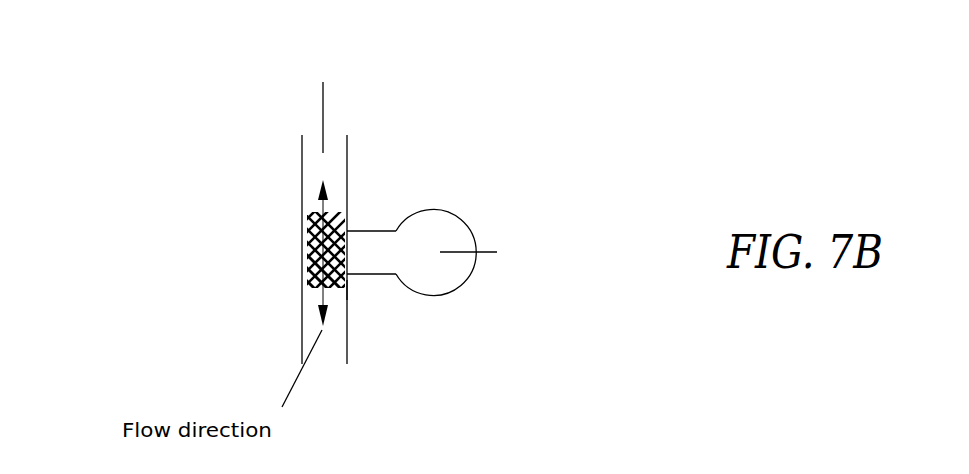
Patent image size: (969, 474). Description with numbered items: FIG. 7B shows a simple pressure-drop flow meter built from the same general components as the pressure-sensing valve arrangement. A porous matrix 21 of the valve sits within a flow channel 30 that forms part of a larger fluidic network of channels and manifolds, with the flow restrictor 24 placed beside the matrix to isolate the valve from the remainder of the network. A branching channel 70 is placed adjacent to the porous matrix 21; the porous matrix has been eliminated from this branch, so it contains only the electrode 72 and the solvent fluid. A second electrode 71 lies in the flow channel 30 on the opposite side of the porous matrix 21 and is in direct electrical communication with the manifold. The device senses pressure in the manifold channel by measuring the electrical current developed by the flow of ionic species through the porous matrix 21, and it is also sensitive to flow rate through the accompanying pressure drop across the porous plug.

The porous matrix 21 is at (302, 263).
The flow restrictor 24 is at (347, 288).
The flow channel 30 is at (303, 212).
The branching channel 70 is at (494, 161).
The electrode 71 is at (322, 113).
The electrode 72 is at (477, 253).